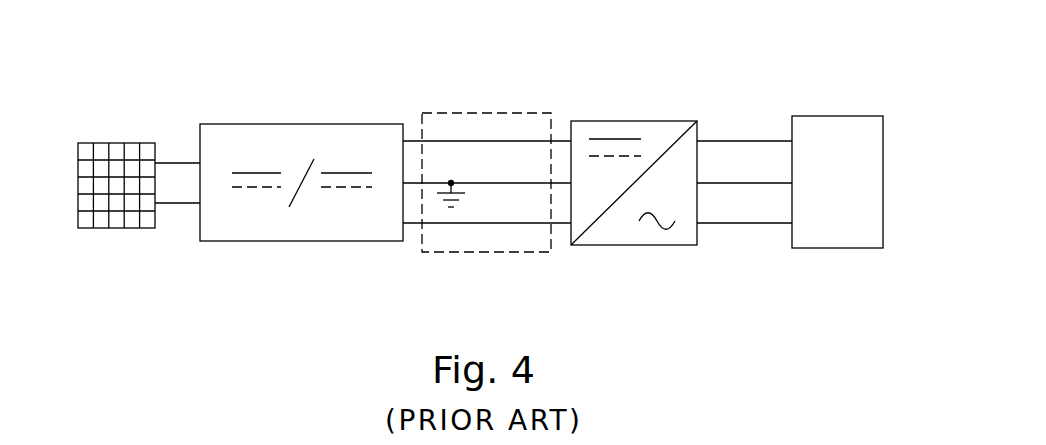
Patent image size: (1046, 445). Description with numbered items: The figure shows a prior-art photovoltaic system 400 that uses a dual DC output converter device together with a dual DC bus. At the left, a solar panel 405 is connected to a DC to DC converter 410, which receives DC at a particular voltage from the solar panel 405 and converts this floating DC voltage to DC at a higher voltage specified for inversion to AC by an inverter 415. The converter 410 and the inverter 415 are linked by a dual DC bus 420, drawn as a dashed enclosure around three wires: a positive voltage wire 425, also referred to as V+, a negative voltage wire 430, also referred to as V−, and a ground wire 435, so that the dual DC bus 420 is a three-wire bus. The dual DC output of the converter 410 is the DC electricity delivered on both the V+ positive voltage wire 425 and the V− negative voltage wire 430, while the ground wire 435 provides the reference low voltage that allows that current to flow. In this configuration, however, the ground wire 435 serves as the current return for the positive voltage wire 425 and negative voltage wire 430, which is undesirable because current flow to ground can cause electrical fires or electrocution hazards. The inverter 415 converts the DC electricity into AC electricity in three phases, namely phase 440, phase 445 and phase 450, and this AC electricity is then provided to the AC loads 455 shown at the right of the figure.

The photovoltaic system 400 is at (92, 27).
The solar panel 405 is at (117, 143).
The DC to DC converter 410 is at (281, 124).
The inverter 415 is at (632, 121).
The dual DC bus 420 is at (465, 113).
The positive voltage wire 425 is at (520, 141).
The negative voltage wire 430 is at (434, 224).
The ground wire 435 is at (517, 183).
The phase 440 is at (757, 141).
The phase 445 is at (737, 223).
The phase 450 is at (753, 183).
The AC loads 455 is at (883, 145).